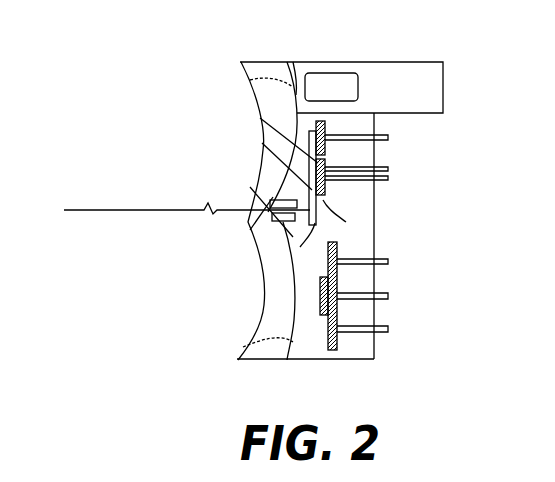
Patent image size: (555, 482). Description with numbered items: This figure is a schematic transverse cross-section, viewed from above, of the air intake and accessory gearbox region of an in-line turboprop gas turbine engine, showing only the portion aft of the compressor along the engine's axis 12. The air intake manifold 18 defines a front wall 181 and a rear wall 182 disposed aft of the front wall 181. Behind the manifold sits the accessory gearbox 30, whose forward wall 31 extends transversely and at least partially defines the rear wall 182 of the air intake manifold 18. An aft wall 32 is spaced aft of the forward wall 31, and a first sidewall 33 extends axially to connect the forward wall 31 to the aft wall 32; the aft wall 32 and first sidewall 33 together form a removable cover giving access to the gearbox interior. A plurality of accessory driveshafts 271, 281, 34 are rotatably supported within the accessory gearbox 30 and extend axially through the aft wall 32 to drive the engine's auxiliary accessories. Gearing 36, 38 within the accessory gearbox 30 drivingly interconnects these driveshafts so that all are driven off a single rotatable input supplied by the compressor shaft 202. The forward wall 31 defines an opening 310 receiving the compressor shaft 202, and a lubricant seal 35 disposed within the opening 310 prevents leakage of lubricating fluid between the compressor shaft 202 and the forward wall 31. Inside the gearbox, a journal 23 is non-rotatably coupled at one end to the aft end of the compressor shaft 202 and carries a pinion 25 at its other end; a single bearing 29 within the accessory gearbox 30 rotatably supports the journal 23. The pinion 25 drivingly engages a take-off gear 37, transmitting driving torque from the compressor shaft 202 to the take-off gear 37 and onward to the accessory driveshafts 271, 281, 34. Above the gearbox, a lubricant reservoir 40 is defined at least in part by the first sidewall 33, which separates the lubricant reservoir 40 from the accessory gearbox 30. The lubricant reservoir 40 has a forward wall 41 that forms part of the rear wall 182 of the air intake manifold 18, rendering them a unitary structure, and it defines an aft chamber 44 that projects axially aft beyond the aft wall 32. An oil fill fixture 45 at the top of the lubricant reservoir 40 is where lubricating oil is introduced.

The optical axis 12 is at (80, 210).
The air intake manifold 18 is at (263, 65).
The journal 23 is at (308, 212).
The pinion 25 is at (302, 244).
The bearing 29 is at (272, 235).
The accessory gearbox 30 is at (375, 213).
The forward wall 31 is at (289, 360).
The aft wall 32 is at (388, 328).
The first sidewall 33 is at (367, 113).
The accessory driveshaft 34 is at (388, 167).
The lubricant seal 35 is at (240, 200).
The gear 36 is at (260, 118).
The take-off gear 37 is at (262, 143).
The gear 38 is at (320, 290).
The lubricant reservoir 40 is at (402, 62).
The forward wall 41 is at (292, 63).
The aft chamber 44 is at (432, 90).
The oil fill fixture 45 is at (338, 76).
The front wall 181 is at (260, 320).
The rear wall 182 is at (250, 80).
The compressor shaft 202 is at (213, 200).
The accessory driveshaft 271 is at (388, 134).
The accessory driveshaft 281 is at (388, 180).
The opening 310 is at (243, 222).